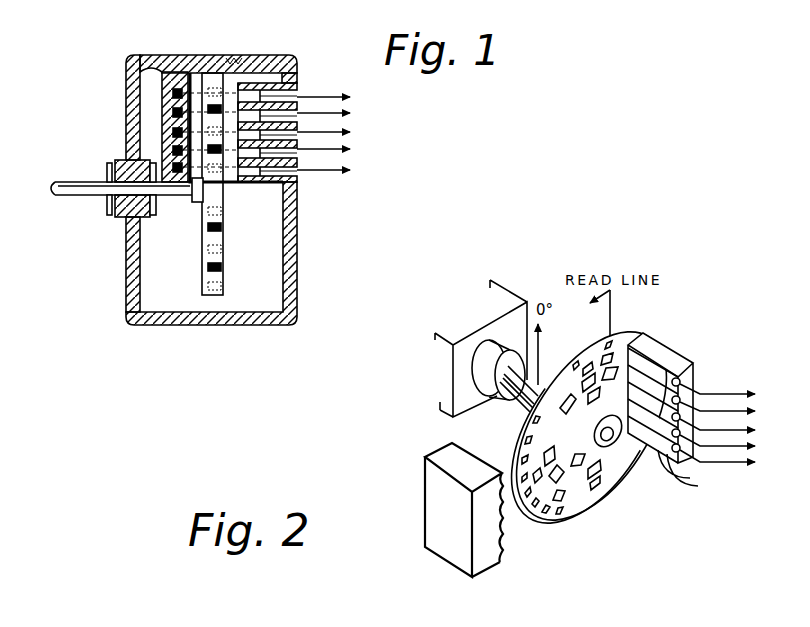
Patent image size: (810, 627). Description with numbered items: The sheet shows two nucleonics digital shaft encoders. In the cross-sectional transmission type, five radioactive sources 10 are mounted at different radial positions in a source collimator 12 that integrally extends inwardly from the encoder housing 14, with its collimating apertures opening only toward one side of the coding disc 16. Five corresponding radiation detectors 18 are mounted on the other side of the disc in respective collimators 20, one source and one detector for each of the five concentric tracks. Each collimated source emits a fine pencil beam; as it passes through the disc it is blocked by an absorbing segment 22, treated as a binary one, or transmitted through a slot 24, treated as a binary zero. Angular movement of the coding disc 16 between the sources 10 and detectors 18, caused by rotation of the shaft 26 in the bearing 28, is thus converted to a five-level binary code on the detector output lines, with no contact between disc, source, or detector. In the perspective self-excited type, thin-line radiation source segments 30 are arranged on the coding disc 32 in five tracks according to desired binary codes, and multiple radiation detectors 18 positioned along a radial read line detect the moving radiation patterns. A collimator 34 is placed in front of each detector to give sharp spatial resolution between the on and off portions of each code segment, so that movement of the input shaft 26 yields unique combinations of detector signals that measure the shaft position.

In FIG. 1, the radioactive sources 10 is at (172, 167).
In FIG. 1, the source collimator 12 is at (156, 78).
In FIG. 1, the encoder housing 14 is at (208, 56).
In FIG. 1, the coding disc 16 is at (202, 249).
In FIG. 1, the radiation detectors 18 is at (292, 147).
In FIG. 2, the radiation detectors 18 is at (719, 443).
In FIG. 1, the collimators 20 is at (249, 190).
In FIG. 1, the absorbing segment 22 is at (222, 229).
In FIG. 1, the slot 24 is at (226, 284).
In FIG. 1, the shaft 26 is at (75, 182).
In FIG. 2, the shaft 26 is at (540, 384).
In FIG. 1, the bearing 28 is at (108, 205).
In FIG. 2, the radiation source segments 30 is at (566, 512).
In FIG. 2, the coding disc 32 is at (612, 486).
In FIG. 2, the collimator 34 is at (677, 362).